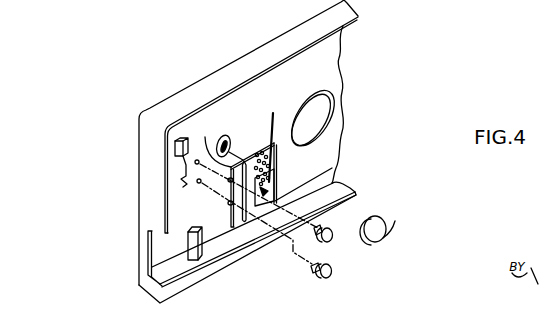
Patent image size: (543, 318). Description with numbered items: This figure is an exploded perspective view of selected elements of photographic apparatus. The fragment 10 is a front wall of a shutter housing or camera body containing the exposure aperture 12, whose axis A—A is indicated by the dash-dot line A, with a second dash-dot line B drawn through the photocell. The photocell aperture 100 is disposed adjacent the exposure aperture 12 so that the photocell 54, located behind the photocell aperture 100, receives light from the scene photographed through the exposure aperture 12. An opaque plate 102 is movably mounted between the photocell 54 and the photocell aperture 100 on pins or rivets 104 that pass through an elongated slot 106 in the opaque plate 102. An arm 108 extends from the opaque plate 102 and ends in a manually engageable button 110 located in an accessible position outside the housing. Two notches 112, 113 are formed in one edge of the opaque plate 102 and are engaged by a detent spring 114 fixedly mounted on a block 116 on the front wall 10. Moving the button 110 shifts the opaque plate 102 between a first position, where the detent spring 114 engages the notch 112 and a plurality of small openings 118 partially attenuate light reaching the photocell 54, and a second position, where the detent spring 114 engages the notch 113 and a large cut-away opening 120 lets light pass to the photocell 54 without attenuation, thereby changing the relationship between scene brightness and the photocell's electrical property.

The fragment 10 is at (333, 53).
The exposure aperture 12 is at (318, 107).
The photocell 54 is at (368, 217).
The photocell aperture 100 is at (227, 136).
The opaque plate 102 is at (331, 175).
The pins or rivets 104 is at (333, 268).
The elongated slot 106 is at (243, 159).
The arm 108 is at (222, 243).
The manually engageable button 110 is at (197, 262).
The notch 112 is at (213, 143).
The notch 113 is at (229, 204).
The detent spring 114 is at (184, 162).
The block 116 is at (178, 140).
The small openings 118 is at (271, 140).
The large opening 120 is at (272, 190).
The axis A— A is at (223, 68).
The section line B is at (150, 100).